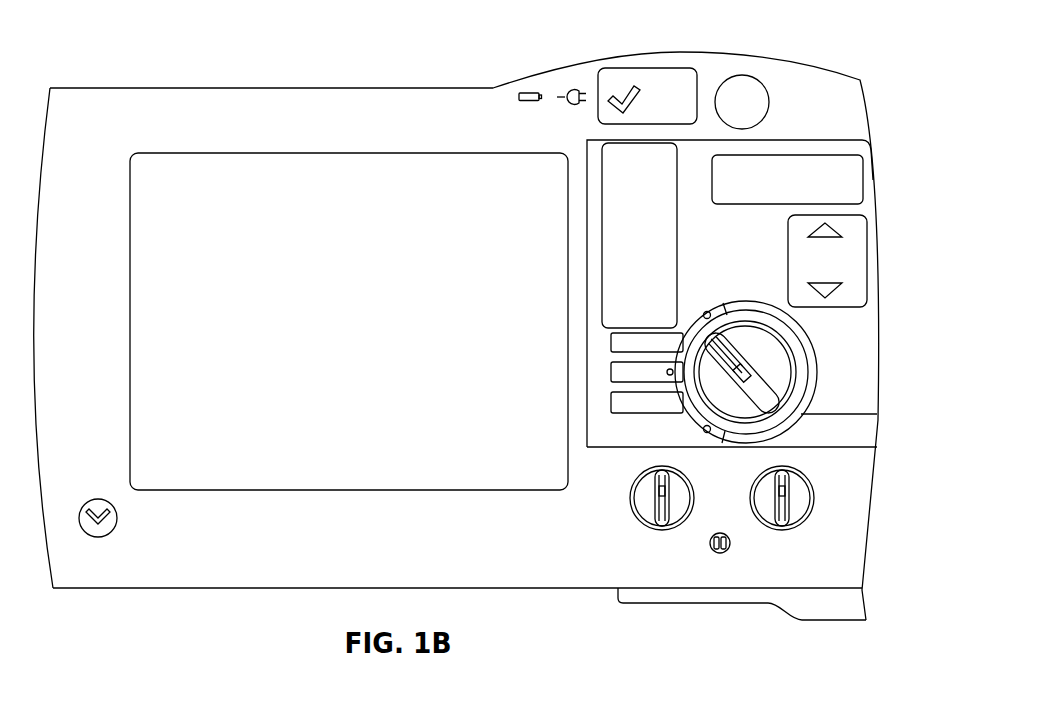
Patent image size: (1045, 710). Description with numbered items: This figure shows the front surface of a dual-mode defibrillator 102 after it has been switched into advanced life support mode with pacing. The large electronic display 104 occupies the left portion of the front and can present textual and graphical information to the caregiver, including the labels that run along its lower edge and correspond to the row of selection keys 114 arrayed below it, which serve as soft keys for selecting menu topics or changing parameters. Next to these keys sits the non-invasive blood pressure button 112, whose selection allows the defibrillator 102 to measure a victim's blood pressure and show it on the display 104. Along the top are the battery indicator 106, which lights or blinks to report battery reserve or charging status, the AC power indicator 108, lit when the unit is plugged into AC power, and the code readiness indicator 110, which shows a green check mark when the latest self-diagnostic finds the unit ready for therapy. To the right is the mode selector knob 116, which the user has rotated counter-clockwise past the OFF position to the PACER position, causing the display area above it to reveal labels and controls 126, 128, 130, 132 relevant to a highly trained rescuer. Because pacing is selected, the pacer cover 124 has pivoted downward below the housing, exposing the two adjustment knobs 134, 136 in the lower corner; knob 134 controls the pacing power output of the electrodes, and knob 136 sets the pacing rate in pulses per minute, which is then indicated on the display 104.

The dual-mode defibrillator 102 is at (222, 88).
The electronic display 104 is at (305, 183).
The battery indicator 106 is at (530, 92).
The AC power indicator 108 is at (577, 86).
The code readiness indicator 110 is at (673, 83).
The non-invasive blood pressure button 112 is at (90, 537).
The selection keys 114 is at (210, 572).
The mode selector knob 116 is at (793, 373).
The pacer cover 124 is at (850, 603).
The control panel 126 is at (609, 342).
The soft keys 128 is at (677, 158).
The analyze and charge buttons 130 is at (858, 178).
The energy select control 132 is at (857, 257).
The adjustment knob 134 is at (630, 497).
The adjustment knob 136 is at (813, 502).